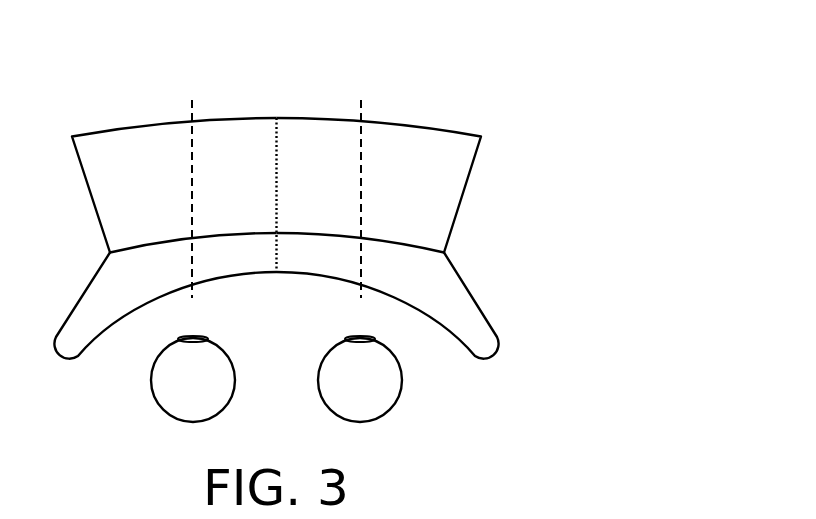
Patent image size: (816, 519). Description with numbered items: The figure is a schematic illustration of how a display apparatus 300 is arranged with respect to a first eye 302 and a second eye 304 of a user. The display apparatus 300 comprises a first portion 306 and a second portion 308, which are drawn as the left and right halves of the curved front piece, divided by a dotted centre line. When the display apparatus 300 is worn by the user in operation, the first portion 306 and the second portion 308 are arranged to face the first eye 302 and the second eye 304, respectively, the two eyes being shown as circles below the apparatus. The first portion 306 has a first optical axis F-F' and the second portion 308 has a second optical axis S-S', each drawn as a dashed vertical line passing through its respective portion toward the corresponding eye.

The display apparatus 300 is at (333, 187).
The first eye 302 is at (150, 390).
The second eye 304 is at (402, 391).
The first portion 306 is at (154, 195).
The second portion 308 is at (397, 196).